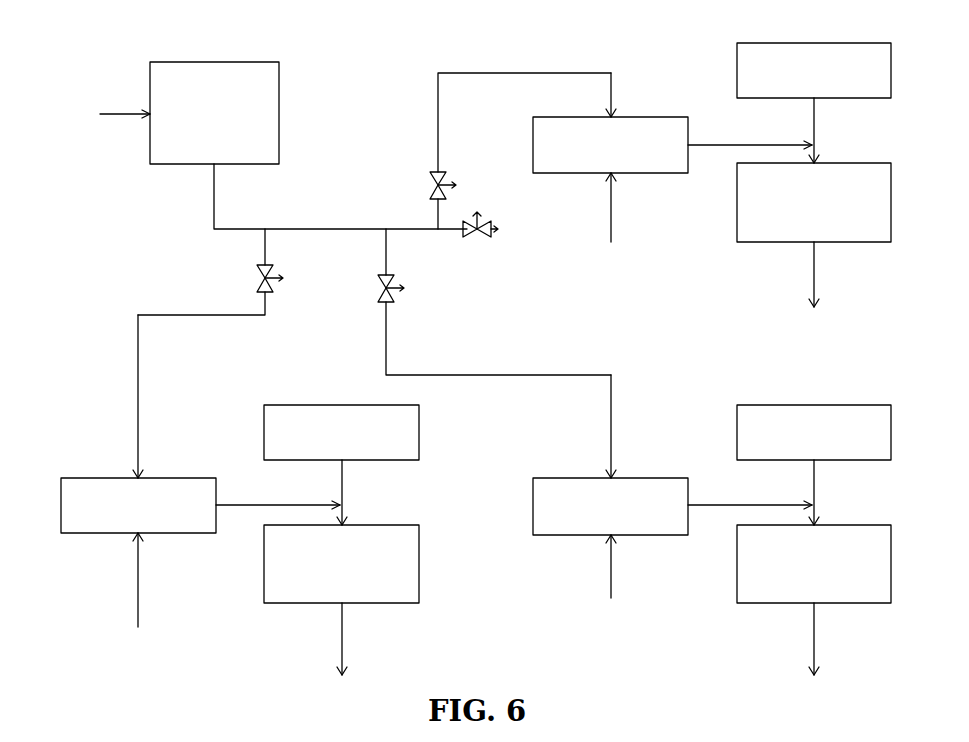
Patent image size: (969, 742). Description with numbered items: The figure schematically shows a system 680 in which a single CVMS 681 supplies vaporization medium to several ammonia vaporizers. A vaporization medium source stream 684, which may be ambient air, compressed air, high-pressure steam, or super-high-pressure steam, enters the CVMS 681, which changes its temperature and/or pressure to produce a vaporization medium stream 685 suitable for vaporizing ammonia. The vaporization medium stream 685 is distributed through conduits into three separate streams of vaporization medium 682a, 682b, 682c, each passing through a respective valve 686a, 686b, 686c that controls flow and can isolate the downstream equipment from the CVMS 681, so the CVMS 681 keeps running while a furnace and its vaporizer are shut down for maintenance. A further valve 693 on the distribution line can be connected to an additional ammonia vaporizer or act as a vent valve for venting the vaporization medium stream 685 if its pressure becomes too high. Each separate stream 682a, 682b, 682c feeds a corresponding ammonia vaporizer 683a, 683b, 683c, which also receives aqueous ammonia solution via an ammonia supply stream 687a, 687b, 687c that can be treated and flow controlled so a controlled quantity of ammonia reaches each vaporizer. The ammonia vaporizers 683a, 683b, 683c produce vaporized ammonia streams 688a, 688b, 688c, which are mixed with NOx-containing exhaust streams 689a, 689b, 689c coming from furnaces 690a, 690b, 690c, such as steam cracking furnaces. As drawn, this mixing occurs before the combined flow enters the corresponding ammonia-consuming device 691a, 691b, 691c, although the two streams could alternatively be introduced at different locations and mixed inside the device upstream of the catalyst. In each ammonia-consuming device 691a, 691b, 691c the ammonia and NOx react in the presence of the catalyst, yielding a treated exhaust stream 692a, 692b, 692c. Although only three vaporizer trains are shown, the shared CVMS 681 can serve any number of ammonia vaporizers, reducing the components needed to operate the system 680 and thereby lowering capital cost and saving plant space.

The system 680 is at (117, 60).
The CVMS 681 is at (214, 113).
The vaporization medium source stream 684 is at (110, 116).
The vaporization medium stream 685 is at (218, 232).
The valve 686a is at (270, 292).
The valve 686b is at (395, 300).
The valve 686c is at (431, 176).
The valve 693 is at (486, 240).
The separate stream of vaporization medium 682a is at (138, 388).
The separate stream of vaporization medium 682b is at (611, 405).
The separate stream of vaporization medium 682c is at (525, 73).
The ammonia vaporizer 683a is at (138, 505).
The ammonia vaporizer 683b is at (610, 506).
The ammonia vaporizer 683c is at (610, 145).
The ammonia supply stream 687a is at (138, 565).
The ammonia supply stream 687b is at (611, 570).
The ammonia supply stream 687c is at (611, 200).
The vaporized ammonia stream 688a is at (257, 505).
The vaporized ammonia stream 688b is at (730, 505).
The vaporized ammonia stream 688c is at (725, 145).
The NOx-containing exhaust stream 689a is at (342, 468).
The NOx-containing exhaust stream 689b is at (814, 470).
The NOx-containing exhaust stream 689c is at (814, 105).
The furnace 690a is at (341, 432).
The furnace 690b is at (814, 432).
The furnace 690c is at (814, 70).
The ammonia-consuming device 691a is at (341, 564).
The ammonia-consuming device 691b is at (814, 564).
The ammonia-consuming device 691c is at (814, 202).
The treated exhaust stream 692a is at (342, 655).
The treated exhaust stream 692b is at (814, 655).
The treated exhaust stream 692c is at (814, 278).